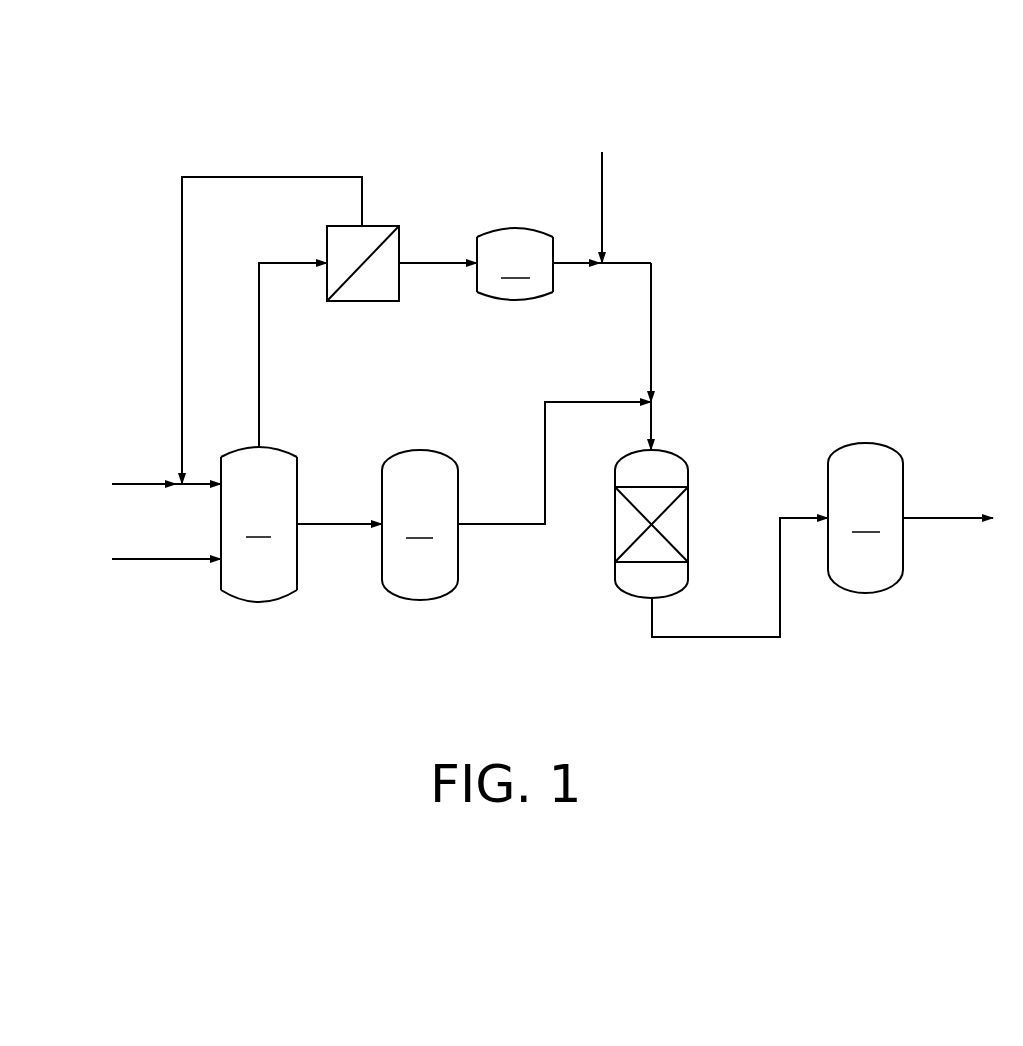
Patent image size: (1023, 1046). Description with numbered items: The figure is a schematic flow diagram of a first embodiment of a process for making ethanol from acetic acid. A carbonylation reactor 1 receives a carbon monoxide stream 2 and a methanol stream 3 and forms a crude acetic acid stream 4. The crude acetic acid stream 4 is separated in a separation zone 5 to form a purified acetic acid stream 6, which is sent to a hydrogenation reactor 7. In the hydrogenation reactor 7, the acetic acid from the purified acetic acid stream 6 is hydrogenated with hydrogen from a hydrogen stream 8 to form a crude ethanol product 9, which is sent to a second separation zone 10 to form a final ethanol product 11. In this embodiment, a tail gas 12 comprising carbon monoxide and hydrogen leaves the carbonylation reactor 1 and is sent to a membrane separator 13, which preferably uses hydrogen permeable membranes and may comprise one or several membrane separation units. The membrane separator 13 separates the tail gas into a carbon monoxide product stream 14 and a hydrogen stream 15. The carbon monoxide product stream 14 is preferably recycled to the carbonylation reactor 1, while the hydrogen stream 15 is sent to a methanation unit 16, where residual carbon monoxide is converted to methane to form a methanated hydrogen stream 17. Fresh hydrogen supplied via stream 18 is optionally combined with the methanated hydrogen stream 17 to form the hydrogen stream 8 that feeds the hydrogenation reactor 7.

The carbonylation reactor 1 is at (259, 524).
The carbon monoxide stream 2 is at (122, 485).
The methanol stream 3 is at (122, 559).
The crude acetic acid stream 4 is at (331, 524).
The separation zone 5 is at (420, 525).
The purified acetic acid stream 6 is at (500, 524).
The hydrogenation reactor 7 is at (628, 580).
The hydrogen stream 8 is at (651, 317).
The crude ethanol product 9 is at (685, 637).
The separation zone 10 is at (865, 518).
The final ethanol product 11 is at (940, 518).
The tail gas 12 is at (259, 353).
The membrane separator 13 is at (384, 226).
The carbon monoxide product stream 14 is at (216, 177).
The hydrogen stream 15 is at (437, 263).
The methanation unit 16 is at (515, 264).
The methanated hydrogen stream 17 is at (567, 263).
The fresh hydrogen stream 18 is at (602, 162).